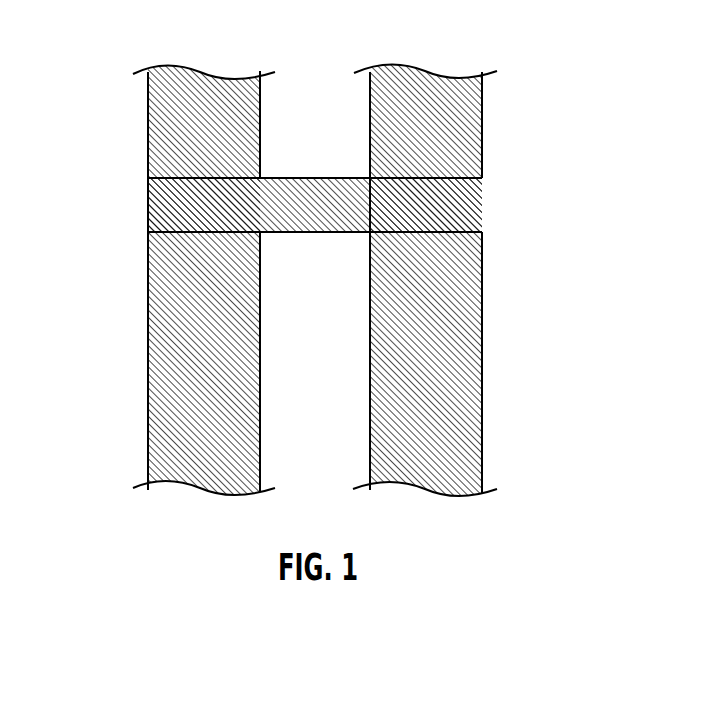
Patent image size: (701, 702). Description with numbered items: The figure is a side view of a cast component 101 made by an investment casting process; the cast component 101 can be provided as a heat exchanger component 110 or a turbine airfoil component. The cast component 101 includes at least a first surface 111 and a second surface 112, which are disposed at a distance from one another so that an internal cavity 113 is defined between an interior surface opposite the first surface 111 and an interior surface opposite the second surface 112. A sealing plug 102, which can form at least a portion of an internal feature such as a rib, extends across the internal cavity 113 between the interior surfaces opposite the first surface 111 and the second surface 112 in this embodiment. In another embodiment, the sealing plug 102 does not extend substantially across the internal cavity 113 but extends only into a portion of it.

The cast component 101 is at (193, 82).
The sealing plug 102 is at (310, 190).
The heat exchanger component 110 is at (312, 256).
The first surface 111 is at (148, 312).
The second surface 112 is at (483, 307).
The internal cavity 113 is at (337, 306).